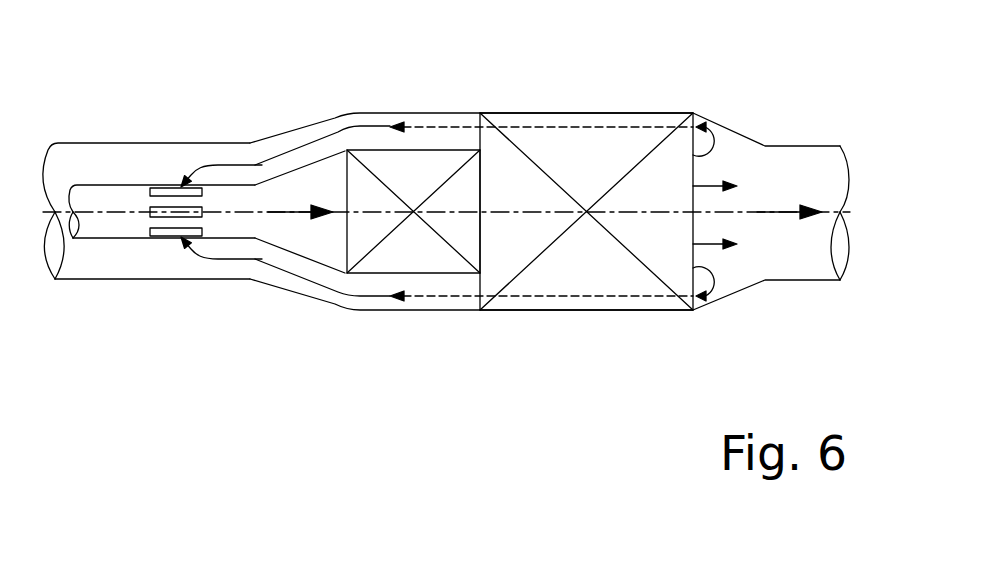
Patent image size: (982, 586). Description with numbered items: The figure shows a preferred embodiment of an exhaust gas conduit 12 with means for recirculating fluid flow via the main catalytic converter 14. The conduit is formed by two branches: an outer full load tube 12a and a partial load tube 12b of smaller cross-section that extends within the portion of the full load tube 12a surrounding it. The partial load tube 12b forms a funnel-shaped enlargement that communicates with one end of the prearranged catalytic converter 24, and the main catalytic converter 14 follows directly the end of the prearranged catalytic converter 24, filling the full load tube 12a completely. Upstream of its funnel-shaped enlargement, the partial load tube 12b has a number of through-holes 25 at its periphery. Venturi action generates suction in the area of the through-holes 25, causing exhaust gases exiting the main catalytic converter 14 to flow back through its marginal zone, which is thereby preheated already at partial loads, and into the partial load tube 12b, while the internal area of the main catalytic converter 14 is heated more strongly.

The exhaust gas conduit 12 is at (781, 130).
The full load tube 12a is at (130, 143).
The partial load tube 12b is at (90, 240).
The main catalytic converter 14 is at (580, 283).
The prearranged catalytic converter 24 is at (352, 275).
The through-holes 25 is at (162, 238).